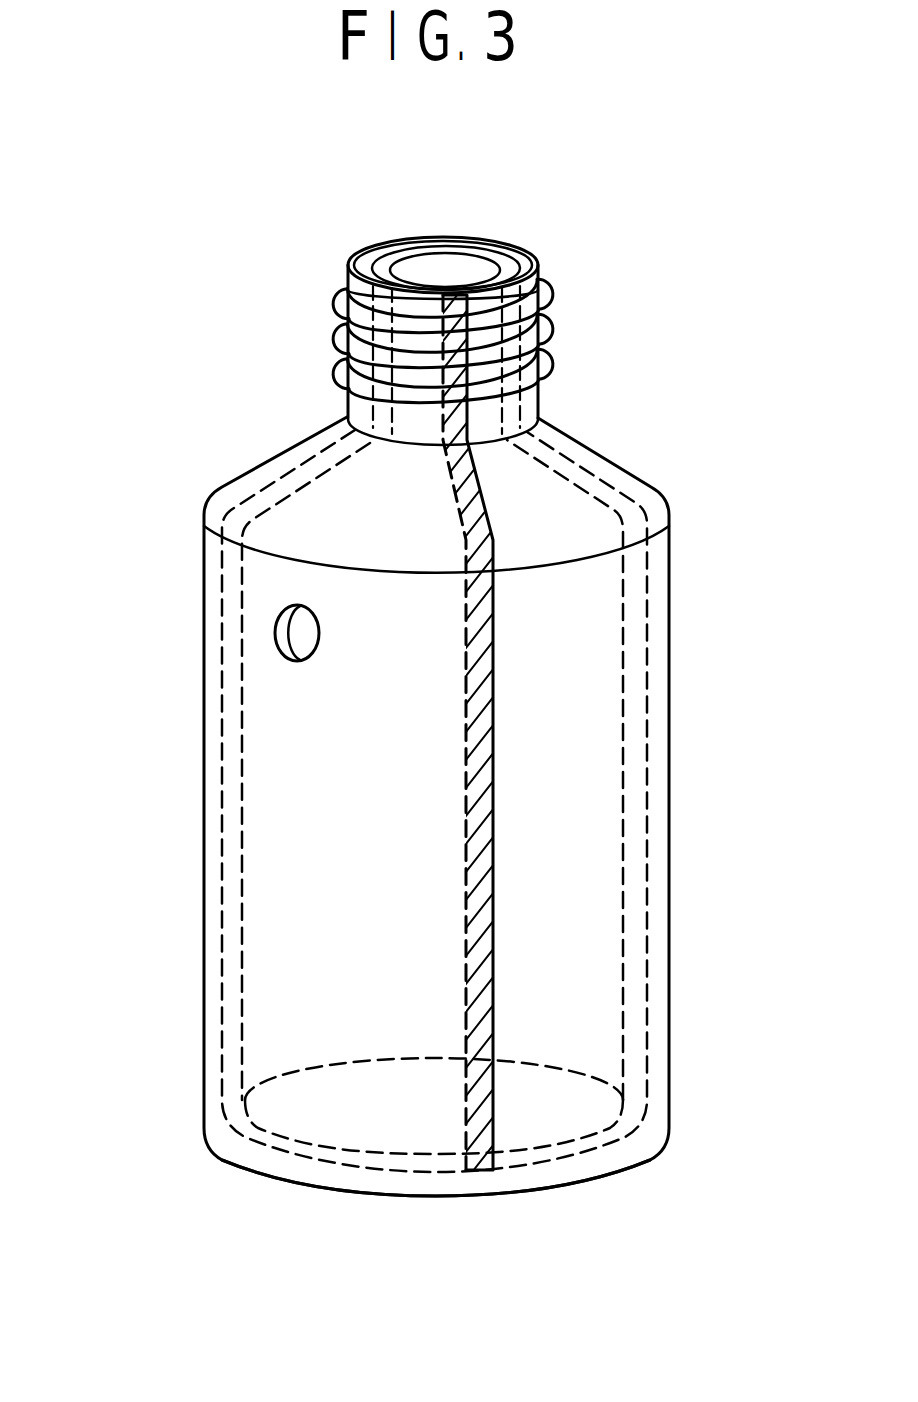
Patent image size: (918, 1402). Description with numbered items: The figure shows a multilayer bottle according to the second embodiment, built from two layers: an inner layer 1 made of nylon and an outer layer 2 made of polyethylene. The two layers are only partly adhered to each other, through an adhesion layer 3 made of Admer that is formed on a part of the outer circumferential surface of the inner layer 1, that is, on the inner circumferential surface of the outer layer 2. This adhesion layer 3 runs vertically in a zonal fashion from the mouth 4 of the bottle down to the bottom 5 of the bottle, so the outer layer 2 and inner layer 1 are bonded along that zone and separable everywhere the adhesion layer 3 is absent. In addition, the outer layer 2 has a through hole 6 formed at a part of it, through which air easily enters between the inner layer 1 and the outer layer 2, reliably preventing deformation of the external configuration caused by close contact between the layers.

The inner layer 1 is at (452, 262).
The outer layer 2 is at (502, 255).
The adhesion layer 3 is at (545, 320).
The mouth 4 is at (415, 270).
The bottom 5 is at (495, 1197).
The through hole 6 is at (276, 638).